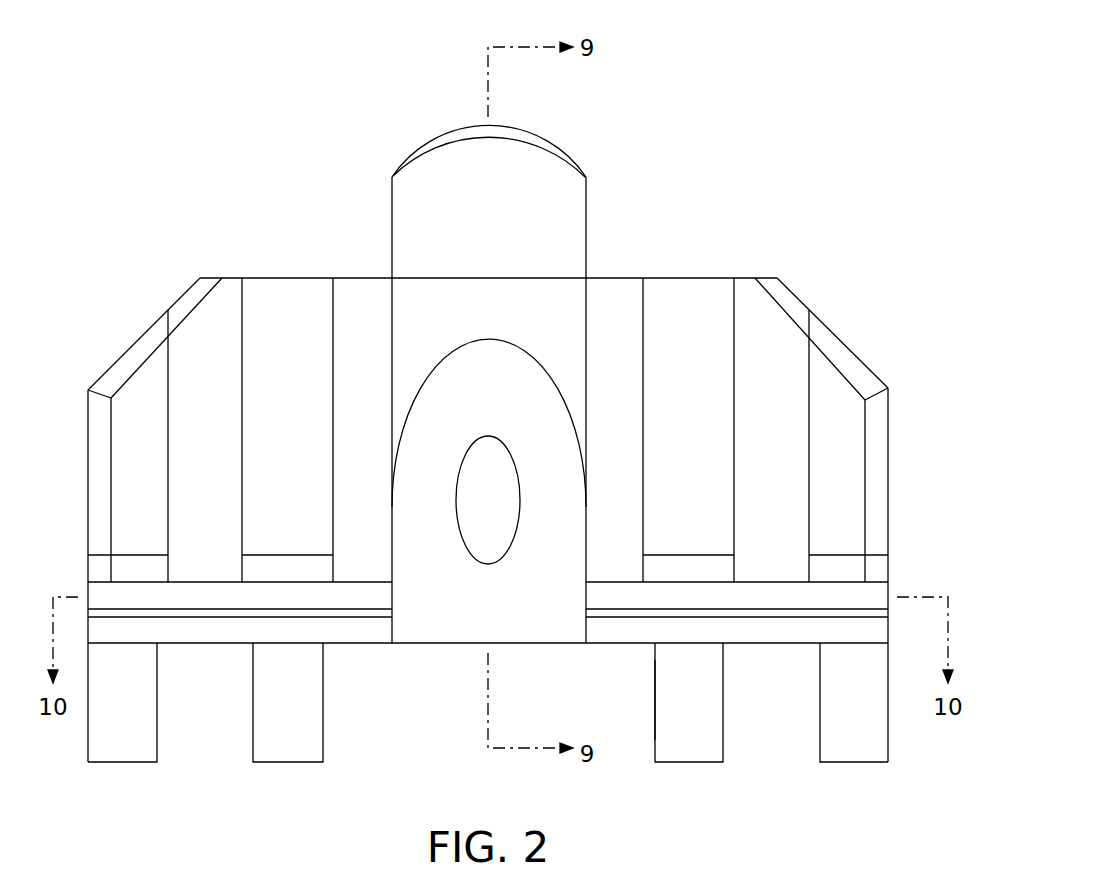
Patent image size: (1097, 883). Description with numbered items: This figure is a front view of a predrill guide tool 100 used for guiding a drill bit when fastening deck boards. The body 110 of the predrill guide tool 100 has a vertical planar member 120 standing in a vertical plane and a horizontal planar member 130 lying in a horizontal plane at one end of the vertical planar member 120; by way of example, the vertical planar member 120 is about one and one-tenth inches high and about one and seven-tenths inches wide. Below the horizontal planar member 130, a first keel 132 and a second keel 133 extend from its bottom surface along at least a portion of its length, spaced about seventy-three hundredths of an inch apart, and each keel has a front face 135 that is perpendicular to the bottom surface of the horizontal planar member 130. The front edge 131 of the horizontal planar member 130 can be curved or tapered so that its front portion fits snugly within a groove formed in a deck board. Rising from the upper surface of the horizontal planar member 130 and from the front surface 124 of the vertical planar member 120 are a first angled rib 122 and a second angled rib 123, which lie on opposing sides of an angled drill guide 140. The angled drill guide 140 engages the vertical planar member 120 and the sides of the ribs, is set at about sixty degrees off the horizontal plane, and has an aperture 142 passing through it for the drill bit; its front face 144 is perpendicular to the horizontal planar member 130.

The predrill guide tool 100 is at (712, 103).
The body 110 is at (858, 373).
The vertical planar member 120 is at (828, 347).
The first angled rib 122 is at (212, 330).
The second angled rib 123 is at (758, 300).
The front surface 124 is at (287, 292).
The horizontal planar member 130 is at (820, 580).
The front edge 131 is at (880, 612).
The first keel 132 is at (295, 743).
The second keel 133 is at (697, 742).
The front face 135 is at (665, 697).
The angled drill guide 140 is at (550, 163).
The aperture 142 is at (478, 530).
The front face 144 is at (552, 625).